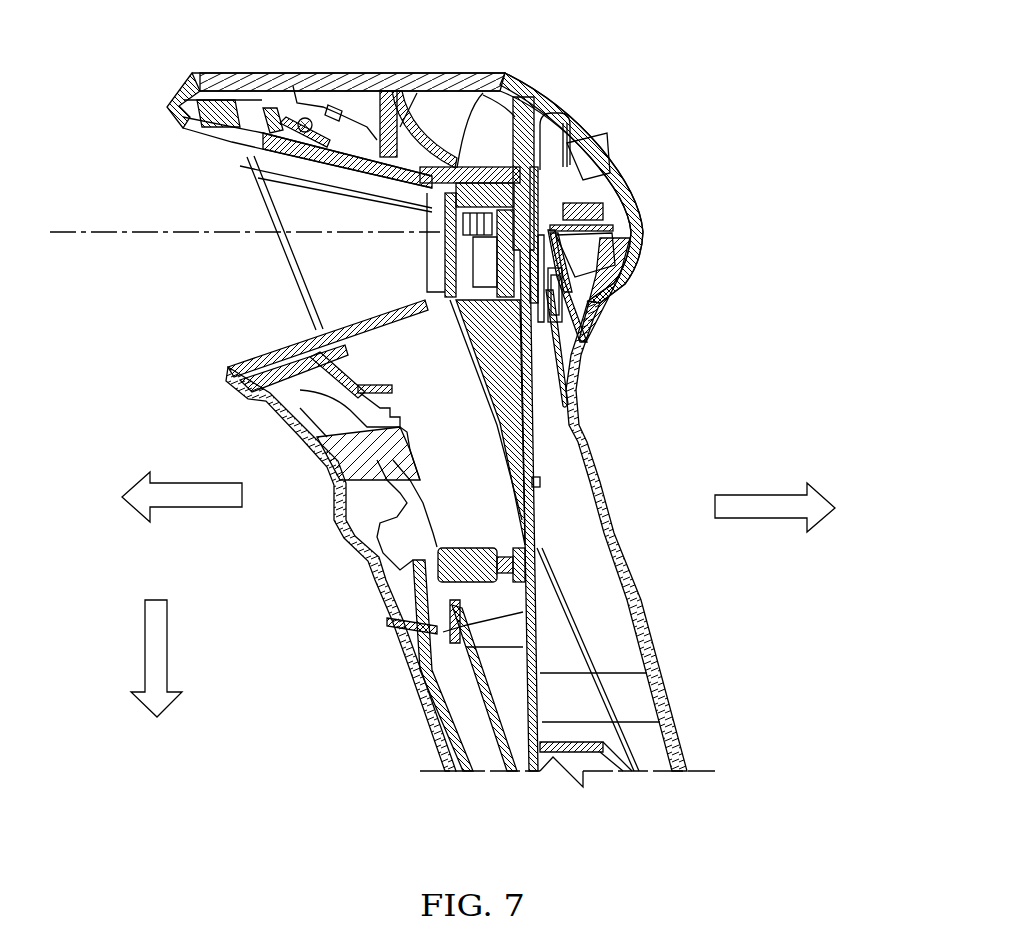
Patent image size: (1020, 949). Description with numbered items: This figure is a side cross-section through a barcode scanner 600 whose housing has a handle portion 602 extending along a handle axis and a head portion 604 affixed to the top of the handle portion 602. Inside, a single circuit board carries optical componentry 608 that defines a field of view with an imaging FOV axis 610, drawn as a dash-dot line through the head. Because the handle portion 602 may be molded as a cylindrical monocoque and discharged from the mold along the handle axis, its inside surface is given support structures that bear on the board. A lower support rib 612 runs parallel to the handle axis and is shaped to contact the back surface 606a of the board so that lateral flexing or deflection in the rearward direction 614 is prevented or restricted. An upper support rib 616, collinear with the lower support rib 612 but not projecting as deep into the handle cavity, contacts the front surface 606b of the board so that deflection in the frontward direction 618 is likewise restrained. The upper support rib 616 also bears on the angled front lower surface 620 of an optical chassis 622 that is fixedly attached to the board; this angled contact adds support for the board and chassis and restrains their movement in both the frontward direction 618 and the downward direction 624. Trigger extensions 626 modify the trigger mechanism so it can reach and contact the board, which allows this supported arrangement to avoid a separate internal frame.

The barcode scanner 600 is at (780, 42).
The handle portion 602 is at (345, 720).
The head portion 604 is at (610, 84).
The back surface of the PCB 606a is at (540, 440).
The front surface of the PCB 606b is at (525, 530).
The optical componentry 608 is at (310, 282).
The imaging FOV axis 610 is at (137, 235).
The lower support rib 612 is at (578, 643).
The rearward direction 614 is at (828, 486).
The upper support rib 616 is at (478, 378).
The frontward direction 618 is at (138, 480).
The front lower surface of the optical chassis 620 is at (503, 341).
The optical chassis 622 is at (510, 279).
The downward direction 624 is at (143, 648).
The trigger extensions 626 is at (430, 603).